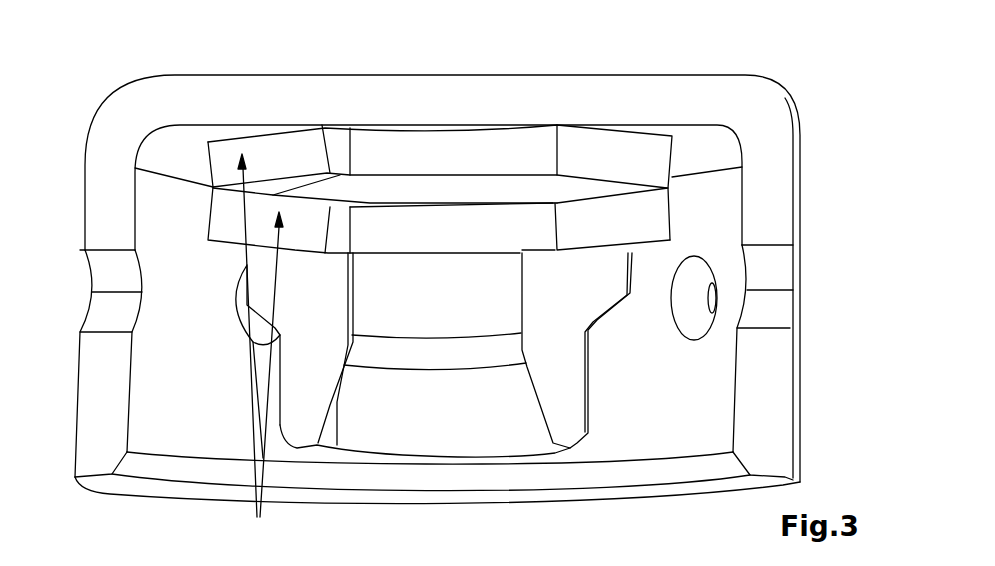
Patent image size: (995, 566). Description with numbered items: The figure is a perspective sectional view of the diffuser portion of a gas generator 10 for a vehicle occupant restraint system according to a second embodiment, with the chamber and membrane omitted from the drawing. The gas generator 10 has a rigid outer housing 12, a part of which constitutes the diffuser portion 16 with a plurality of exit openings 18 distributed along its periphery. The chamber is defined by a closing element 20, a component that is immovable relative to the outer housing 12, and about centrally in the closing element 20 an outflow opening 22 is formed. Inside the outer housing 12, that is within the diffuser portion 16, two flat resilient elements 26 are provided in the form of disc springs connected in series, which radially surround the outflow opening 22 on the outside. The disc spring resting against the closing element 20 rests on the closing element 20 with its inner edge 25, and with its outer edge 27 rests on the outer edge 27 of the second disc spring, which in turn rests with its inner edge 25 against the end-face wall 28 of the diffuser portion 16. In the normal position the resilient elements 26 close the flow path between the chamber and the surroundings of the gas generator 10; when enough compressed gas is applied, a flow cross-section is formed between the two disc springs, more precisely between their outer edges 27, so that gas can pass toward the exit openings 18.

The gas generator 10 is at (858, 214).
The outer housing 12 is at (767, 437).
The diffuser portion 16 is at (767, 370).
The exit openings 18 is at (783, 270).
The closing element 20 is at (560, 387).
The outflow opening 22 is at (462, 425).
The inner edge 25 is at (320, 125).
The resilient elements 26 is at (258, 517).
The outer edge 27 is at (213, 187).
The end-face wall 28 is at (503, 77).